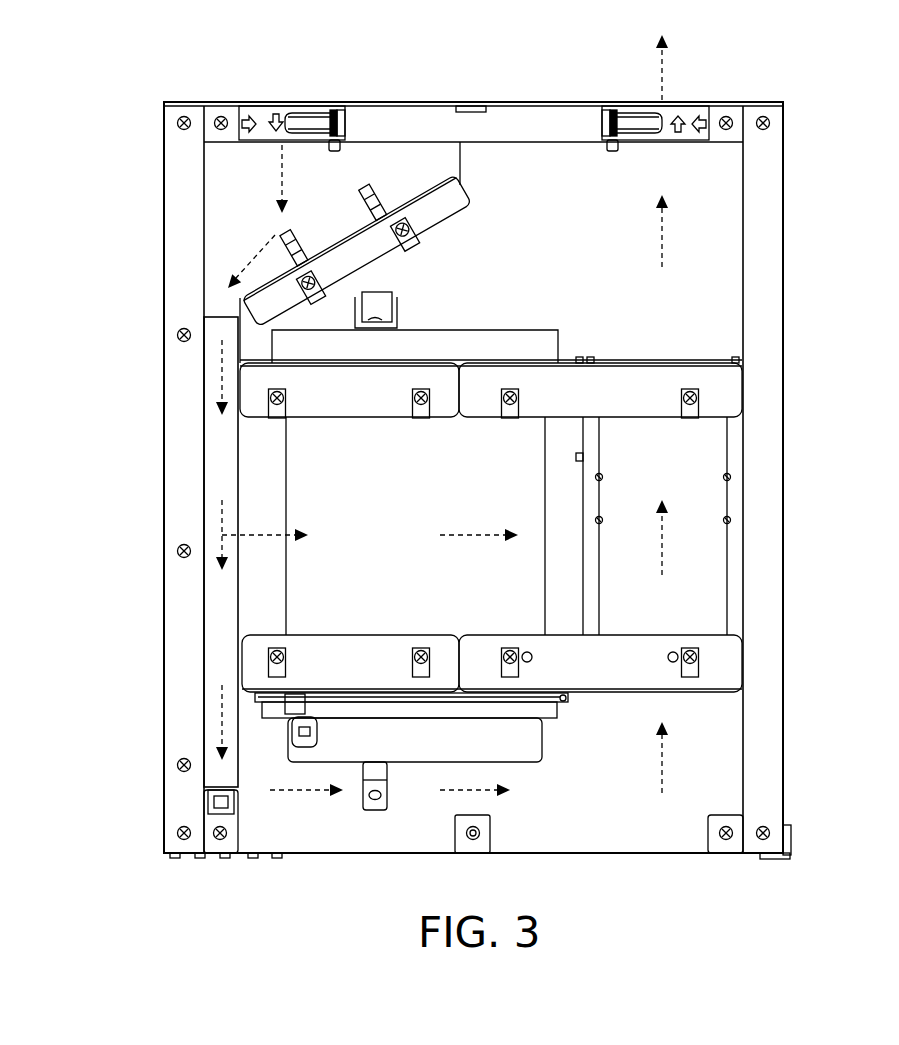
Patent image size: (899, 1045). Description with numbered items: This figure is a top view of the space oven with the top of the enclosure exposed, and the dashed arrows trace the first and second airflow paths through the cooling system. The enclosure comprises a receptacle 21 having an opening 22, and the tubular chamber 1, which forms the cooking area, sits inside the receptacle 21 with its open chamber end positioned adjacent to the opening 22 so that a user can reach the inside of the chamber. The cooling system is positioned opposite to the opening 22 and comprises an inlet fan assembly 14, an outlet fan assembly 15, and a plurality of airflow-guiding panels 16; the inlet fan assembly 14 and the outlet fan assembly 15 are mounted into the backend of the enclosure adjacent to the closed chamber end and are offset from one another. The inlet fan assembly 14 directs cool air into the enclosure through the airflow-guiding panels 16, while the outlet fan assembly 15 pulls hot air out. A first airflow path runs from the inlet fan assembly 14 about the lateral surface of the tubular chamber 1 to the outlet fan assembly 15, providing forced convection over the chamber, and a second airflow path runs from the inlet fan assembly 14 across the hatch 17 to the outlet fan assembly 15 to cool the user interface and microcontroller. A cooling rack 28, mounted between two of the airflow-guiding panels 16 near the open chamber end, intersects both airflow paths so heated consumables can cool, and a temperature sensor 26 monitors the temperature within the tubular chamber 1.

The tubular chamber 1 is at (300, 600).
The inlet fan assembly 14 is at (280, 112).
The outlet fan assembly 15 is at (700, 112).
The airflow-guiding panels 16 is at (448, 213).
The hatch 17 is at (533, 735).
The receptacle 21 is at (170, 448).
The opening 22 is at (543, 832).
The temperature sensor 26 is at (385, 312).
The cooling rack 28 is at (752, 543).